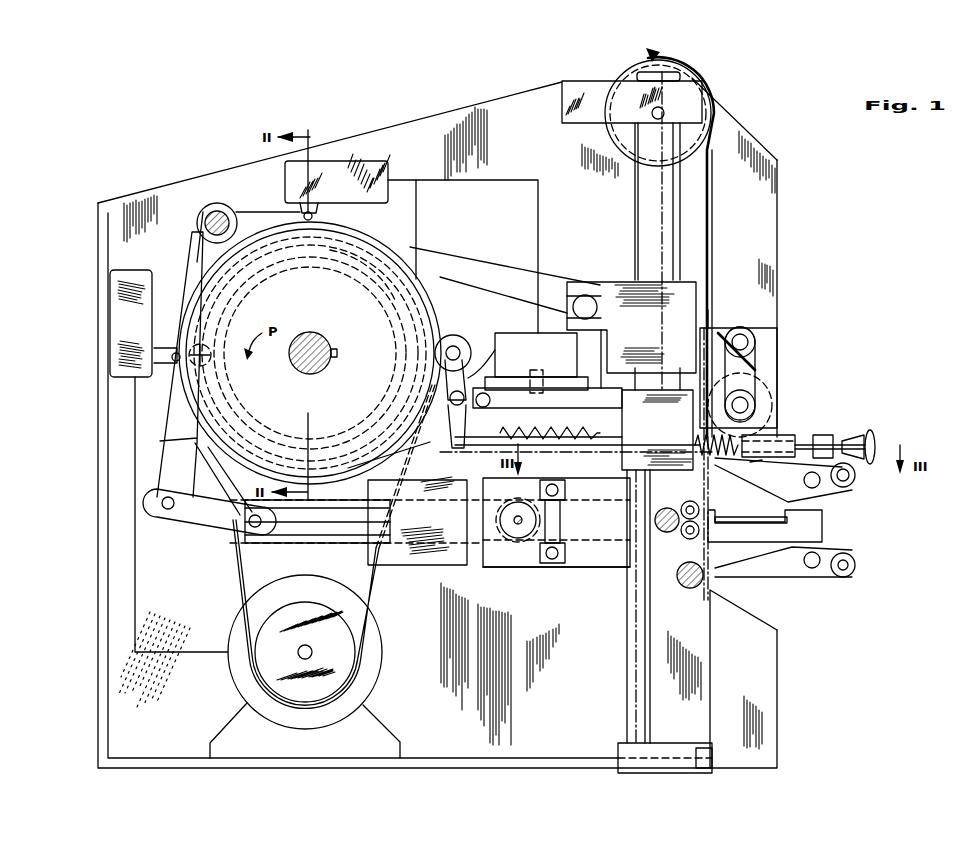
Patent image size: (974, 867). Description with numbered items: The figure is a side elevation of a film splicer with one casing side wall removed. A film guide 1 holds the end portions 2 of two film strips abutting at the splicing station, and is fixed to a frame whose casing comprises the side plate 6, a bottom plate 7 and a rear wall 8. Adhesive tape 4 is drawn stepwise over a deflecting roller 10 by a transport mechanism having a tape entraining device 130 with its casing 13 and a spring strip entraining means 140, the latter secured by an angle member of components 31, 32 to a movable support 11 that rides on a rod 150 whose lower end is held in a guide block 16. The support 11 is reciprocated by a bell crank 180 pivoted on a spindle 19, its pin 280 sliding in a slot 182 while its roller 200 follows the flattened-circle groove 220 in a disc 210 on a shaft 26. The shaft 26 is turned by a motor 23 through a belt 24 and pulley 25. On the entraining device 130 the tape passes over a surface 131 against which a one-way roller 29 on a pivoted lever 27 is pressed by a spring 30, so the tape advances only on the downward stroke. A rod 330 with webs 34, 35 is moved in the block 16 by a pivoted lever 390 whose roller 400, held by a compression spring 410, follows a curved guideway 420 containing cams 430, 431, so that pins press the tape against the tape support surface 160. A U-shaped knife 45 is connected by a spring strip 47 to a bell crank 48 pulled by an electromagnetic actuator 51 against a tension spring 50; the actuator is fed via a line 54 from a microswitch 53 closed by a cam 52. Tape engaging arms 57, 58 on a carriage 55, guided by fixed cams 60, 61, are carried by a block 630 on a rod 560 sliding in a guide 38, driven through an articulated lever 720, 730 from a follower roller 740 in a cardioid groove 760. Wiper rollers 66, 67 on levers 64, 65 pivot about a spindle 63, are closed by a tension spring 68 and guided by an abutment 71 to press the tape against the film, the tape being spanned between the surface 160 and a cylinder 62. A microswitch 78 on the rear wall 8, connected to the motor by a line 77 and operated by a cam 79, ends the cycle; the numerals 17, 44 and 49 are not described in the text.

The film guide 1 is at (824, 520).
The end portion of film strip 2 is at (745, 516).
The adhesive tape 4 is at (714, 240).
The side plate 6 is at (395, 130).
The bottom plate 7 is at (462, 757).
The rear wall 8 is at (100, 408).
The deflecting roller 10 is at (626, 76).
The movable support 11 is at (606, 282).
The casing 13 is at (725, 328).
The guide block 16 is at (648, 421).
The roll holder 17 is at (574, 93).
The spindle 19 is at (207, 212).
The motor 23 is at (382, 650).
The belt 24 is at (236, 578).
The pulley 25 is at (392, 476).
The shaft 26 is at (305, 333).
The pivoted lever 27 is at (760, 395).
The roller 29 is at (770, 412).
The spring 30 is at (748, 362).
The angle member component 31 is at (672, 743).
The angle member component 32 is at (628, 628).
The web 34 is at (823, 434).
The web 35 is at (770, 437).
The guide 38 is at (412, 568).
The rack rod 44 is at (632, 456).
The knife 45 is at (755, 462).
The spring strip 47 is at (558, 454).
The bell crank 48 is at (500, 428).
The guide 49 is at (600, 385).
The tension spring 50 is at (560, 426).
The electromagnetic actuator 51 is at (508, 345).
The cam 52 is at (352, 228).
The microswitch 53 is at (390, 177).
The line 54 is at (505, 186).
The carriage 55 is at (572, 567).
The tape engaging arm 57 is at (856, 490).
The tape engaging arm 58 is at (856, 562).
The fixed abutment or cam 60 is at (807, 474).
The fixed abutment or cam 61 is at (808, 570).
The cylinder 62 is at (683, 588).
The spindle 63 is at (500, 520).
The lever 64 is at (590, 512).
The lever 65 is at (610, 535).
The wiper member 66 is at (688, 500).
The wiper member 67 is at (688, 540).
The tension spring 68 is at (562, 518).
The abutment 71 is at (655, 520).
The line 77 is at (136, 588).
The microswitch 78 is at (133, 270).
The cam 79 is at (402, 252).
The tape entraining device 130 is at (760, 361).
The surface 131 is at (713, 322).
The tape entraining means 140 is at (716, 655).
The rod 150 is at (648, 196).
The tape support surface 160 is at (706, 482).
The bell crank 180 is at (512, 246).
The slot 182 is at (567, 293).
The roller 200 is at (212, 354).
The disc 210 is at (392, 232).
The groove 220 is at (338, 412).
The pin 280 is at (587, 295).
The rod 330 is at (840, 436).
The pivoted lever 390 is at (495, 352).
The roller 400 is at (468, 327).
The compression spring 410 is at (698, 438).
The curved guideway 420 is at (418, 268).
The cam 430 is at (243, 212).
The cam 431 is at (440, 440).
The rod 560 is at (332, 540).
The block 630 is at (505, 567).
The articulated lever 720 is at (205, 525).
The articulated lever 730 is at (165, 460).
The follower roller 740 is at (205, 362).
The groove 760 is at (368, 290).